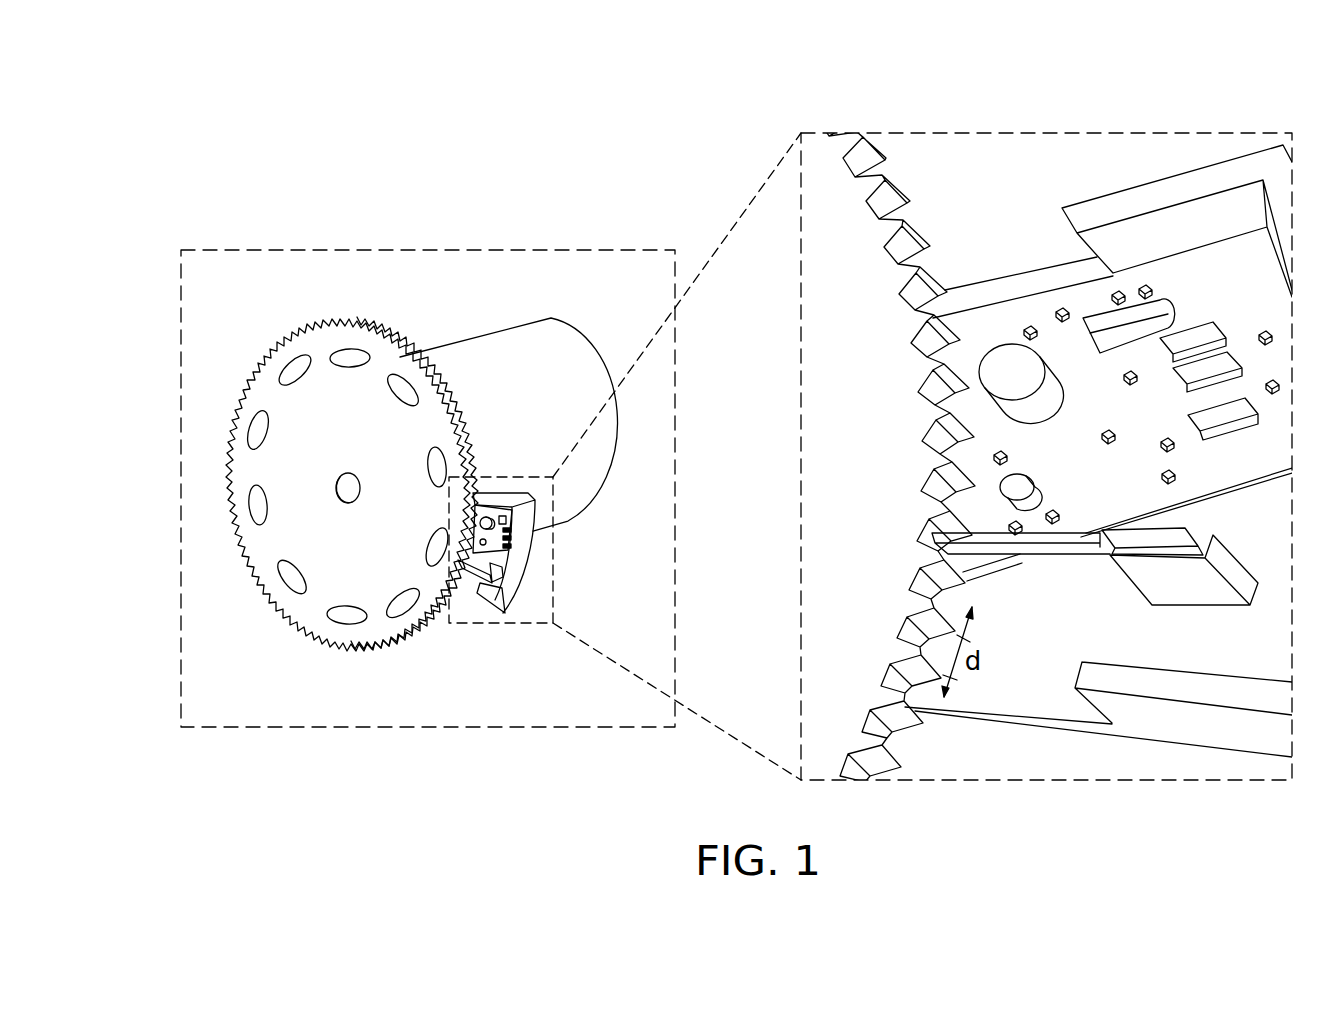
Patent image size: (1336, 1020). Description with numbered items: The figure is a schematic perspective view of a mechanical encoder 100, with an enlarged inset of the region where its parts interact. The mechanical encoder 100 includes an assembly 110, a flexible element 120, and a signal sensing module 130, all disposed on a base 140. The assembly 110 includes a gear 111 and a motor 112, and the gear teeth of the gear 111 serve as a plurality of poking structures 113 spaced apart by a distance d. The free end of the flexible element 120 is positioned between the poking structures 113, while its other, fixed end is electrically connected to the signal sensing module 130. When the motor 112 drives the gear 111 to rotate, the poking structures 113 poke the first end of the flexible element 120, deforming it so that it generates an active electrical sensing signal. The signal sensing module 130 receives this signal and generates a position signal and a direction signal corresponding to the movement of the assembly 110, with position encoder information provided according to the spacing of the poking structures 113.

The mechanical encoder 100 is at (447, 729).
The assembly 110 is at (425, 201).
The gear 111 is at (322, 345).
The motor 112 is at (460, 362).
The poking structures 113 is at (380, 654).
The flexible element 120 is at (467, 578).
The signal sensing module 130 is at (532, 530).
The base 140 is at (538, 618).